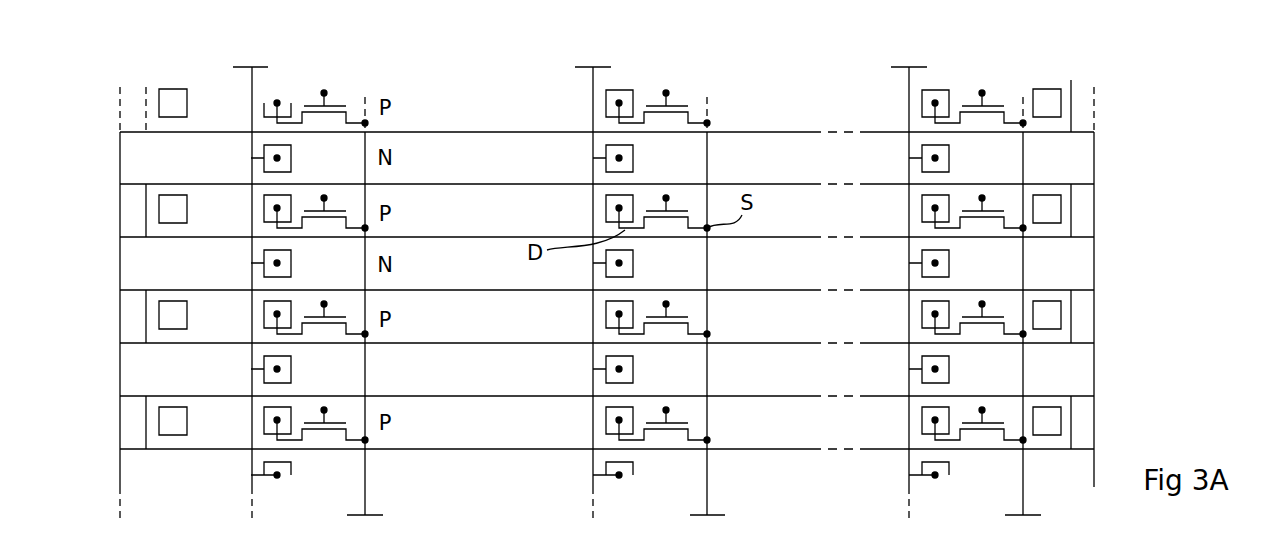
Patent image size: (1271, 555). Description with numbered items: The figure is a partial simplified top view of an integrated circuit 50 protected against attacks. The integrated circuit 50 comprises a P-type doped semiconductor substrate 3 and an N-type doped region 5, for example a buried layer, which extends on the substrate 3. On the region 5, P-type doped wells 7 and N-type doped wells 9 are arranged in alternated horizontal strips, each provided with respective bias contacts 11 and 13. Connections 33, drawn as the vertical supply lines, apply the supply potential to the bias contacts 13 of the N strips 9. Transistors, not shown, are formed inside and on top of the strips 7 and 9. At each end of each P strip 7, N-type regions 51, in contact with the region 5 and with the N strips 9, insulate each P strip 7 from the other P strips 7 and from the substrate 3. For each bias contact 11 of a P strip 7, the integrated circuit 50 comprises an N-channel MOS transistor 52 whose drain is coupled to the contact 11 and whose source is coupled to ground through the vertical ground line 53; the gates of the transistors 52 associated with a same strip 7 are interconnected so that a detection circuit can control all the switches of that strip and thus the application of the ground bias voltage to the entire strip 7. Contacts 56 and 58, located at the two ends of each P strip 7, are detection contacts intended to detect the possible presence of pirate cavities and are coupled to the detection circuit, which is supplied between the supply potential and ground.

The integrated circuit 50 is at (127, 70).
The P-type doped semiconductor substrate 3 is at (112, 180).
The N-type doped region 5 is at (112, 228).
The N-type regions 51 is at (1122, 405).
The contact 56 is at (178, 459).
The contact 58 is at (1052, 458).
The connections 33 is at (593, 103).
The output node line 53 is at (365, 257).
The bias contact 13 is at (606, 158).
The bias contact 11 is at (606, 205).
The N-channel MOS transistor 52 is at (667, 218).
The N-type doped well 9 is at (1078, 157).
The P-type doped well 7 is at (1120, 360).